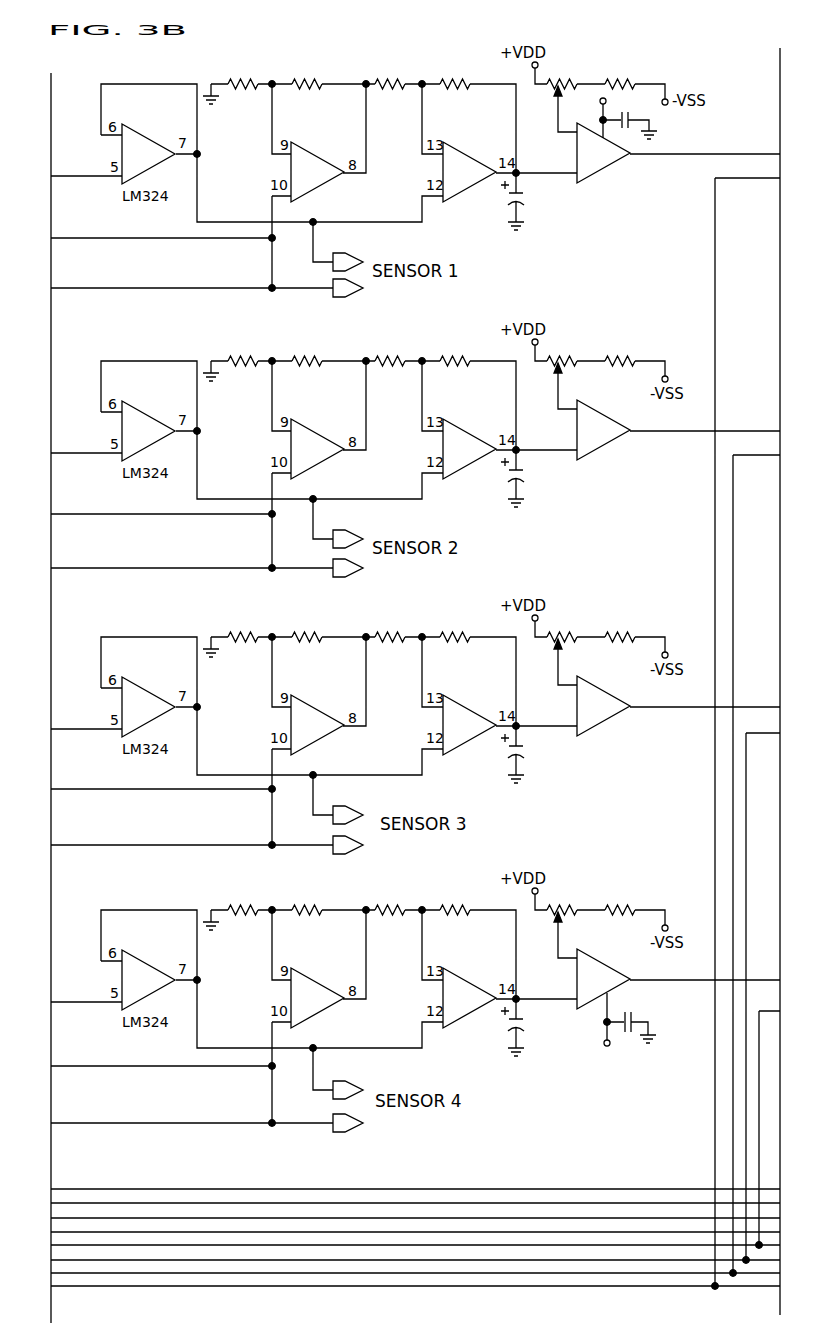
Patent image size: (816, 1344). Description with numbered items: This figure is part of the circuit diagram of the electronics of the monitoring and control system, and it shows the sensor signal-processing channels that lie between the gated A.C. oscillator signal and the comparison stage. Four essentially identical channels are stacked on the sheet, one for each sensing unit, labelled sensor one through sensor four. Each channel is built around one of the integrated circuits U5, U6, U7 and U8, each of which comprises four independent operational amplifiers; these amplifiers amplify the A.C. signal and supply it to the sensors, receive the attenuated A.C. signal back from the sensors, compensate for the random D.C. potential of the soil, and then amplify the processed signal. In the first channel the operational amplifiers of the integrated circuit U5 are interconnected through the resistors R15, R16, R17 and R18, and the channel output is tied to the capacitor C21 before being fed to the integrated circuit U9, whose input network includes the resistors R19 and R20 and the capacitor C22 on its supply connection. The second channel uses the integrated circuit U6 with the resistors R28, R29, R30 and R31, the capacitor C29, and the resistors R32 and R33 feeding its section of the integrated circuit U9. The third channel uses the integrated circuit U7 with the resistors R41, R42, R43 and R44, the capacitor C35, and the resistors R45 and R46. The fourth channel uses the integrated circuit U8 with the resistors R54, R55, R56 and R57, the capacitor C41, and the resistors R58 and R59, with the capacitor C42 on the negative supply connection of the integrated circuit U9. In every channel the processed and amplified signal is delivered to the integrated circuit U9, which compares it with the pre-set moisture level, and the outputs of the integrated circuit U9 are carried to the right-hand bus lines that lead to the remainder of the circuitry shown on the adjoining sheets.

The integrated circuit U5 is at (309, 163).
The integrated circuit U6 is at (309, 440).
The integrated circuit U7 is at (309, 716).
The integrated circuit U8 is at (309, 989).
The integrated circuit U9 is at (606, 563).
The 100K resistor R15 is at (244, 64).
The 20K resistor R16 is at (311, 64).
The 20K resistor R17 is at (390, 64).
The 100K resistor R18 is at (458, 64).
The 10K potentiometer R19 is at (563, 61).
The 10K resistor R20 is at (623, 61).
The 1.0 uF capacitor C21 is at (529, 201).
The 0.1 uF supply bypass capacitor C22 is at (614, 115).
The 100K resistor R28 is at (244, 341).
The 20K resistor R29 is at (311, 341).
The 20K resistor R30 is at (390, 341).
The 100K resistor R31 is at (458, 341).
The 10K potentiometer R32 is at (563, 338).
The 10K resistor R33 is at (623, 338).
The 1.0 uF capacitor C29 is at (529, 478).
The 100K resistor R41 is at (244, 617).
The 20K resistor R42 is at (311, 617).
The 20K resistor R43 is at (390, 617).
The 100K resistor R44 is at (458, 617).
The 10K potentiometer R45 is at (563, 614).
The 10K resistor R46 is at (623, 614).
The 1 uF capacitor C35 is at (529, 754).
The 100K resistor R54 is at (244, 890).
The 20K resistor R55 is at (311, 890).
The 20K resistor R56 is at (390, 890).
The 100K resistor R57 is at (458, 890).
The 10K potentiometer R58 is at (563, 887).
The 10K resistor R59 is at (623, 887).
The 1 uF capacitor C41 is at (529, 1027).
The 0.1 uF supply bypass capacitor C42 is at (628, 1026).